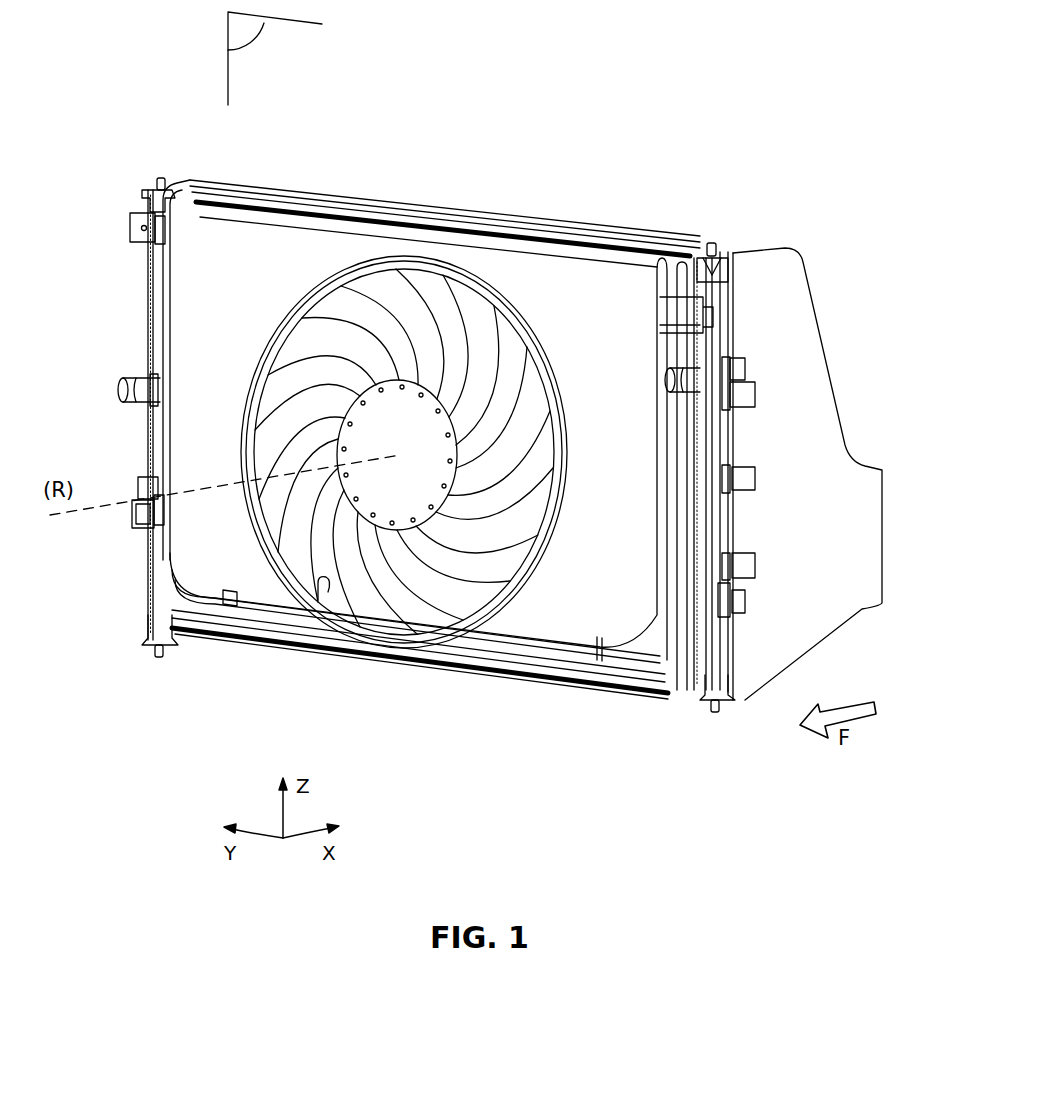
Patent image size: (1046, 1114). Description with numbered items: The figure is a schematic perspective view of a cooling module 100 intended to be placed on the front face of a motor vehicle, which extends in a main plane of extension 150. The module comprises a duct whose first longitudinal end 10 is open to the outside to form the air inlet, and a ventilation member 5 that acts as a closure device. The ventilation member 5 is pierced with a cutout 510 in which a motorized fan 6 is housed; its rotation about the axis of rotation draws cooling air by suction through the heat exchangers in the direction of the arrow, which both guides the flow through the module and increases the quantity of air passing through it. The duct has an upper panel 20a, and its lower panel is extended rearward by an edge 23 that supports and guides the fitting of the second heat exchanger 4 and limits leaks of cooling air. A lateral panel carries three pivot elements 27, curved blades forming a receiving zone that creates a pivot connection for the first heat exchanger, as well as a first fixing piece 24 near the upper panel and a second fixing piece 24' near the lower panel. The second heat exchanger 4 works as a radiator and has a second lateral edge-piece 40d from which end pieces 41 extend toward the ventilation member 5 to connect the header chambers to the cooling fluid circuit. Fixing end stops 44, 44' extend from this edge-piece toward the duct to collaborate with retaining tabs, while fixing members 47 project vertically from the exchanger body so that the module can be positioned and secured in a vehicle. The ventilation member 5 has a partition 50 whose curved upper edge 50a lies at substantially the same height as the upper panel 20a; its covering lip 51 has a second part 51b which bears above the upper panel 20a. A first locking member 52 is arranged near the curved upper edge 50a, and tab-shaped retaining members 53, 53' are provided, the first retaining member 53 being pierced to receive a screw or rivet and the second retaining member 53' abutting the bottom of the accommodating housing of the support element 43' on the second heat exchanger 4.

The main plane of extension 150 is at (252, 45).
The cooling module 100 is at (667, 138).
The first longitudinal end 10 is at (893, 511).
The upper panel 20a is at (398, 200).
The covering lip 51 is at (238, 190).
The second part of the covering lip 51b is at (548, 226).
The partition 50 is at (190, 284).
The curved upper edge 50a is at (272, 215).
The second lateral edge-piece 40d is at (150, 320).
The end piece 41 is at (135, 380).
The support element 43' is at (118, 481).
The fixing member 47 is at (152, 186).
The first locking member 52 is at (702, 315).
The first retaining member 53 is at (125, 246).
The second retaining member 53' is at (123, 530).
The fixing end stop 44 is at (791, 359).
The fixing end stop 44' is at (789, 640).
The first fixing piece 24 is at (797, 357).
The second fixing piece 24' is at (806, 631).
The pivot element 27 is at (740, 396).
The ventilation member 5 is at (198, 626).
The edge 23 is at (256, 646).
The cutout 510 is at (318, 602).
The second heat exchanger 4 is at (417, 493).
The motorized fan 6 is at (521, 536).